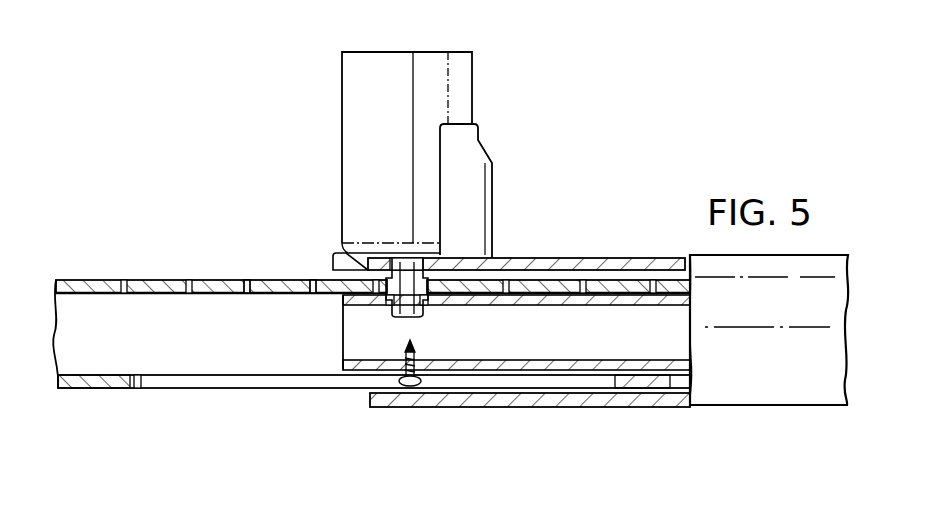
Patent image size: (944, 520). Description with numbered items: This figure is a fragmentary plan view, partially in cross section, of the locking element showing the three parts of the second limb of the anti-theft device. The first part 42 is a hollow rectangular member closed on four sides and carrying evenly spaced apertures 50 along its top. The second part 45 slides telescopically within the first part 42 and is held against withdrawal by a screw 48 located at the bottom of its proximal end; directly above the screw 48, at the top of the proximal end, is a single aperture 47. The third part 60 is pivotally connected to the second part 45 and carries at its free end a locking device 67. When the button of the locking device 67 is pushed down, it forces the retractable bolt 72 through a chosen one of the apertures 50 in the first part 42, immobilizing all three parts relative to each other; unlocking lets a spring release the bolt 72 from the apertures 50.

The first part of the second limb 42 is at (212, 390).
The second part of the second limb 45 is at (577, 408).
The single aperture 47 is at (392, 300).
The screw 48 is at (394, 408).
The apertures 50 is at (312, 280).
The third part of the second limb 60 is at (568, 258).
The locking device 67 is at (340, 78).
The retractable bolt 72 is at (348, 266).